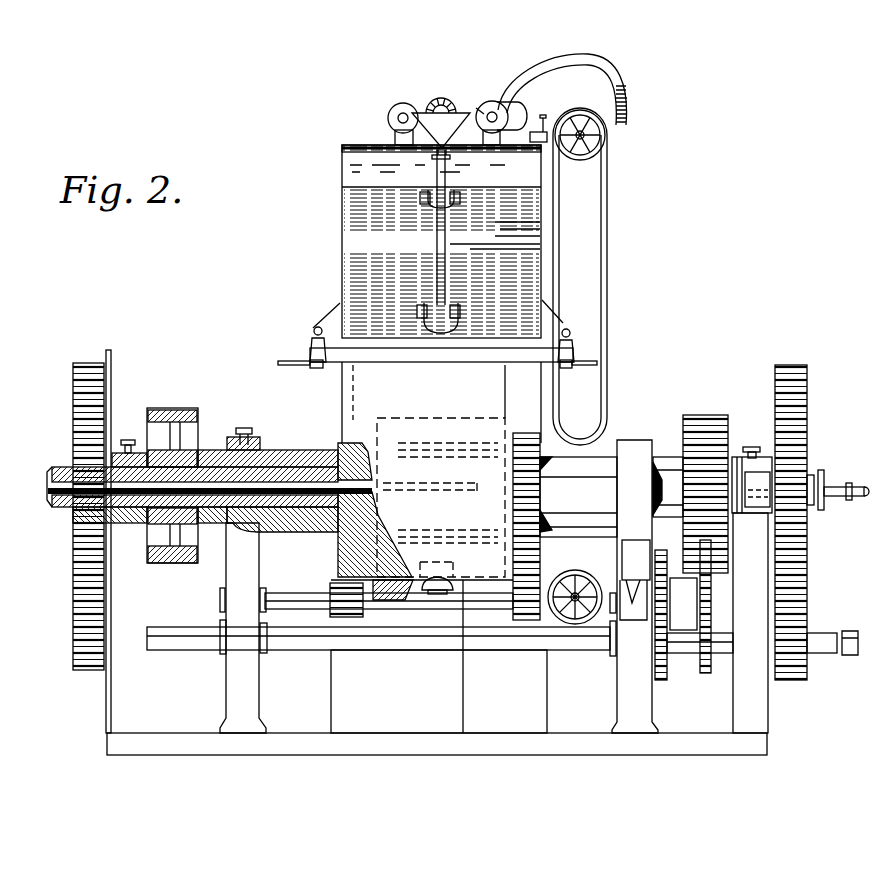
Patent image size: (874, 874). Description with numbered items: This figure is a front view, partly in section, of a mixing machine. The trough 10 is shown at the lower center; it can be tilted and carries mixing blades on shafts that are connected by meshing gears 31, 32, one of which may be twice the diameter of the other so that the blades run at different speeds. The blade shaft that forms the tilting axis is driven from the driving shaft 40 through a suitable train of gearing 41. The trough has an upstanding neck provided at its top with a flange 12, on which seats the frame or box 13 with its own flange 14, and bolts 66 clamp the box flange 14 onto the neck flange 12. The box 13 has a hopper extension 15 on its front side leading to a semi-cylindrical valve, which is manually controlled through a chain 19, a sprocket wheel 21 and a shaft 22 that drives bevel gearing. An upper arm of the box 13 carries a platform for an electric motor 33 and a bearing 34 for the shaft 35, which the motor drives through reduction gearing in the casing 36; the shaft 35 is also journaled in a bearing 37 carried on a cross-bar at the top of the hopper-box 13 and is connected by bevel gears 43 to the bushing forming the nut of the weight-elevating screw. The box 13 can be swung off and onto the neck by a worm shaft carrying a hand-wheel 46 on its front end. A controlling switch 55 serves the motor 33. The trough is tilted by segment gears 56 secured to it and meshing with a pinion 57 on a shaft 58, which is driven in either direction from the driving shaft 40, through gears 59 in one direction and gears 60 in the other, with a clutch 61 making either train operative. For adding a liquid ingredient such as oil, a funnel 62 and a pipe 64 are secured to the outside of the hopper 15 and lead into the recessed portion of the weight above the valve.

The trough 10 is at (441, 506).
The flange 12 is at (336, 365).
The frame or box 13 is at (352, 173).
The flange 14 is at (357, 343).
The hopper extension 15 is at (360, 242).
The chain 19 is at (607, 215).
The sprocket wheel 21 is at (600, 137).
The shaft 22 is at (544, 119).
The gear 31 is at (733, 457).
The gear 32 is at (180, 410).
The electric motor 33 is at (582, 55).
The bearing 34 is at (502, 103).
The shaft 35 is at (480, 108).
The casing 36 is at (567, 95).
The bearing 37 is at (406, 104).
The driving shaft 40 is at (790, 640).
The train of gearing 41 is at (83, 630).
The bevel gears 43 is at (448, 97).
The hand-wheel 46 is at (580, 626).
The controlling switch 55 is at (633, 620).
The segment gears 56 is at (540, 567).
The pinion 57 is at (517, 617).
The shaft 58 is at (293, 600).
The gears 59 is at (708, 674).
The gears 60 is at (663, 672).
The clutch 61 is at (683, 604).
The funnel 62 is at (441, 134).
The pipe 64 is at (445, 253).
The bolts 66 is at (310, 365).